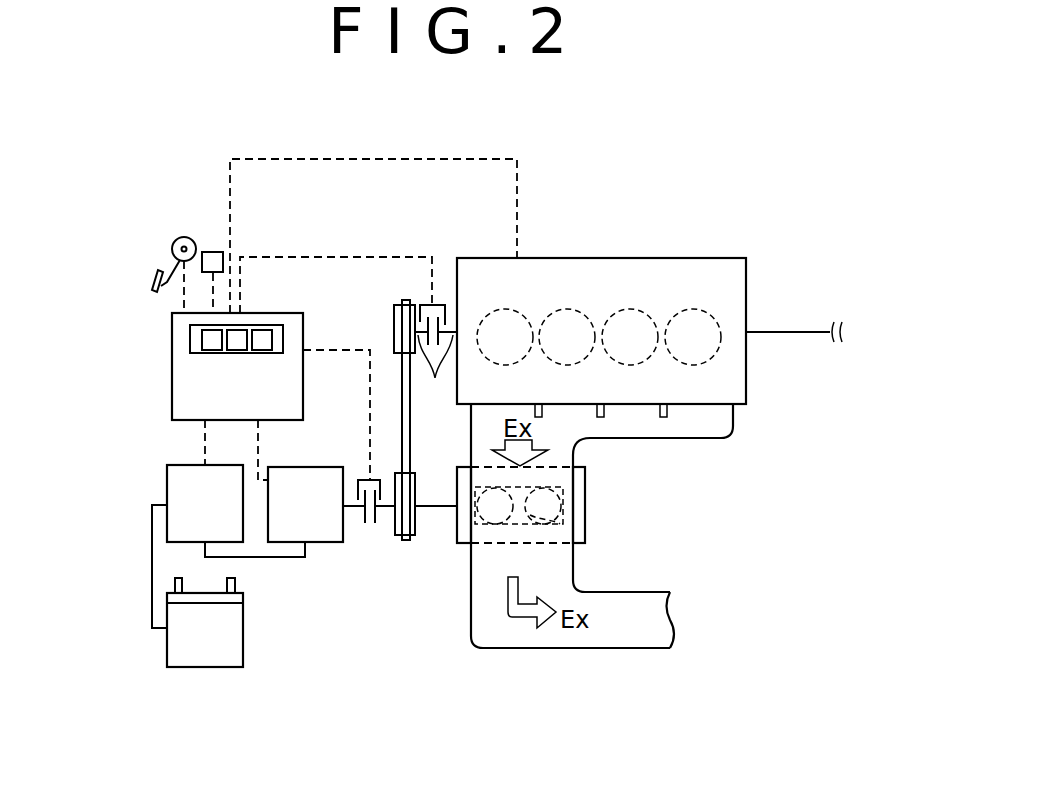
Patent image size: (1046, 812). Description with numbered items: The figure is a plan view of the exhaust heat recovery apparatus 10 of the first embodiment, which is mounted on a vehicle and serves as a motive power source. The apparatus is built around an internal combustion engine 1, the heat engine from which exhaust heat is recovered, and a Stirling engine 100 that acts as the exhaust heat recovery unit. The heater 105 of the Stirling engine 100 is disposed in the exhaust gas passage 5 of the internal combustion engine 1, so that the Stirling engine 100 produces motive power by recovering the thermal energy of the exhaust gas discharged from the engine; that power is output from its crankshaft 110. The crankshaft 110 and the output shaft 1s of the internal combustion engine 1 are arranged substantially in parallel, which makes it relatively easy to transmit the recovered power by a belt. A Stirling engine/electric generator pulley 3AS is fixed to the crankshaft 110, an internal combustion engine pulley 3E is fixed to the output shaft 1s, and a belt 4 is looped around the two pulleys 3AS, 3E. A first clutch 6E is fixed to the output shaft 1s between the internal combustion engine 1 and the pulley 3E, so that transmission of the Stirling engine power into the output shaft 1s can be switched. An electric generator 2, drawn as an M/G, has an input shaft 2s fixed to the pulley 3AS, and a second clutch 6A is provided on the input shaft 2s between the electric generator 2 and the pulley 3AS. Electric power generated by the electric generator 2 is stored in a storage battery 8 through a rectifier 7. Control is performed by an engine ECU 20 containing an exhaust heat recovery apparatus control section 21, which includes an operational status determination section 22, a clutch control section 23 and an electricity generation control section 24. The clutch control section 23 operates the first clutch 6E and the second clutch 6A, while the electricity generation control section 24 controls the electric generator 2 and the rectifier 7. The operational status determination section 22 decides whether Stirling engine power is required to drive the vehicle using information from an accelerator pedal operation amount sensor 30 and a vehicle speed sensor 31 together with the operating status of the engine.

The internal combustion engine 1 is at (732, 282).
The output shaft 1s is at (789, 332).
The electric generator 2 is at (323, 530).
The input shaft 2s is at (357, 508).
The internal combustion engine pulley 3E is at (394, 317).
The Stirling engine/electric generator pulley 3AS is at (397, 535).
The belt 4 is at (410, 438).
The exhaust gas passage 5 is at (563, 482).
The first clutch 6E is at (443, 295).
The second clutch 6A is at (362, 475).
The rectifier 7 is at (180, 480).
The storage battery 8 is at (200, 653).
The exhaust heat recovery apparatus 10 is at (403, 249).
The engine ECU 20 is at (178, 388).
The exhaust heat recovery apparatus control section 21 is at (197, 327).
The operational status determination section 22 is at (202, 337).
The clutch control section 23 is at (236, 332).
The electricity generation control section 24 is at (262, 332).
The accelerator pedal operation amount sensor 30 is at (184, 237).
The vehicle speed sensor 31 is at (213, 252).
The Stirling engine 100 is at (578, 507).
The heater 105 is at (550, 522).
The crankshaft 110 is at (443, 508).